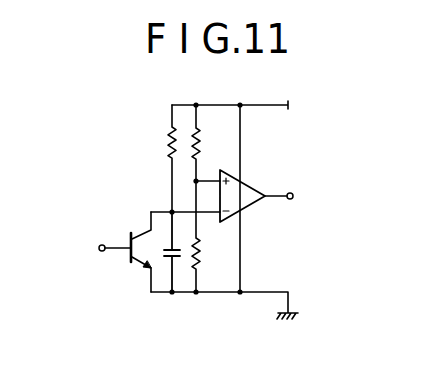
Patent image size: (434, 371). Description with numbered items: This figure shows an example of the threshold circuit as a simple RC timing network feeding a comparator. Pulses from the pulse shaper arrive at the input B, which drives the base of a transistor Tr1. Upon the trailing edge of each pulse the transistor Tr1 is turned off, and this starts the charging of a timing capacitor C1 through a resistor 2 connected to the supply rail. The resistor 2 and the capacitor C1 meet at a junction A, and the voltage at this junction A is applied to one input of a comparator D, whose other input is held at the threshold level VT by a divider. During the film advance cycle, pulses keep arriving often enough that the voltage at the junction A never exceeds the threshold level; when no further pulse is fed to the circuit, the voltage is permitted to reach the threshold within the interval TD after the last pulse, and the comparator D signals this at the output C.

The resistor 2 is at (166, 139).
The junction A is at (170, 210).
The input B is at (112, 243).
The output C is at (290, 191).
The comparator D is at (250, 186).
The transistor Tr1 is at (140, 261).
The timing capacitor C1 is at (167, 257).